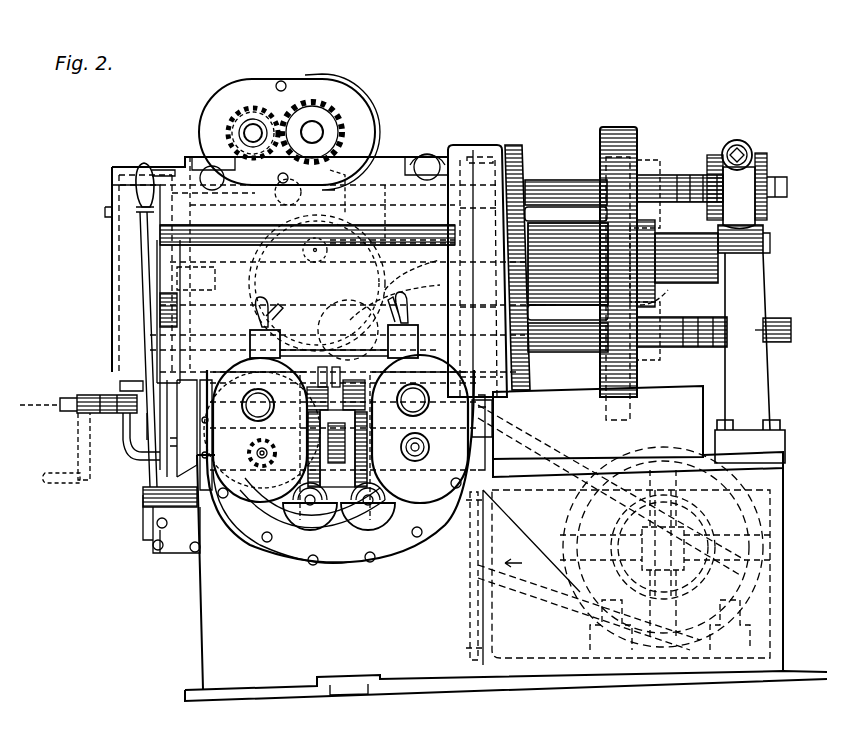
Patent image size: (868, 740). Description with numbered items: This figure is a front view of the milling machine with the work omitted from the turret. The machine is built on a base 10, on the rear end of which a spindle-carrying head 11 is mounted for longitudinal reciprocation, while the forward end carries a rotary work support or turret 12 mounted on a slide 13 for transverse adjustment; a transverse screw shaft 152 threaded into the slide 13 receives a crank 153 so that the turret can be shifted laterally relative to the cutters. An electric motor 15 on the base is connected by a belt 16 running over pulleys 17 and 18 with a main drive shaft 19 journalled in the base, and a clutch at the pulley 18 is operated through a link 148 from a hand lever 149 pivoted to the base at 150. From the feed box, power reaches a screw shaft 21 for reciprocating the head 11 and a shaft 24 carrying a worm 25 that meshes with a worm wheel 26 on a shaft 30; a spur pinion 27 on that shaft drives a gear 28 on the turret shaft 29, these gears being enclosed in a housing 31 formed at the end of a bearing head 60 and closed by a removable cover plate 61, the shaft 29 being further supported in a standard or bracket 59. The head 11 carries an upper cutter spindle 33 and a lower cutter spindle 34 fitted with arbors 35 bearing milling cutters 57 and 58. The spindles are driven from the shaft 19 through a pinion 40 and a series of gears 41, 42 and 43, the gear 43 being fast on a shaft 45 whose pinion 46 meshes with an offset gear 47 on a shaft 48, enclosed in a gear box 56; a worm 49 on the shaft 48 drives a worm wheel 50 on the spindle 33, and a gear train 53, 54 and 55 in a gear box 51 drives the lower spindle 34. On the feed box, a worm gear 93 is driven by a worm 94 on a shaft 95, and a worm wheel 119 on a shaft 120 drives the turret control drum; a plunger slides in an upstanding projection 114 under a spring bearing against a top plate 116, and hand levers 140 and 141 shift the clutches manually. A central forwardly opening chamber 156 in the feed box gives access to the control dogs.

The base 10 is at (506, 578).
The spindle-carrying head 11 is at (439, 149).
The rotary work support or turret 12 is at (617, 127).
The slide 13 is at (150, 390).
The electric motor 15 is at (745, 515).
The belt 16 is at (565, 456).
The pulley 17 is at (697, 520).
The pulley 18 is at (415, 555).
The main drive shaft 19 is at (396, 430).
The screw shaft 21 is at (422, 442).
The shaft 24 is at (269, 465).
The worm 25 is at (278, 420).
The worm wheel 26 is at (250, 352).
The spur pinion 27 is at (498, 412).
The gear 28 is at (498, 150).
The turret shaft 29 is at (763, 248).
The shaft 30 is at (745, 215).
The housing 31 is at (480, 148).
The upper cutter spindle 33 is at (348, 172).
The lower cutter spindle 34 is at (405, 283).
The cutter-carrying arbor 35 is at (720, 162).
The pinion 40 is at (343, 540).
The gear 41 is at (412, 273).
The gear 42 is at (400, 243).
The gear 43 is at (374, 104).
The shaft 45 is at (312, 132).
The pinion 46 is at (322, 115).
The gear 47 is at (255, 105).
The shaft 48 is at (265, 150).
The worm 49 is at (240, 133).
The worm wheel 50 is at (237, 232).
The gear box 51 is at (112, 226).
The gear 53 is at (146, 165).
The gear 54 is at (150, 270).
The gear 55 is at (150, 375).
The gear box 56 is at (215, 106).
The milling cutter 57 is at (645, 160).
The milling cutter 58 is at (667, 293).
The standard or bracket 59 is at (758, 375).
The bearing head 60 is at (317, 287).
The removable cover plate 61 is at (528, 160).
The worm gear 93 is at (368, 470).
The worm 94 is at (408, 482).
The shaft 95 is at (385, 530).
The upstanding projection 114 is at (418, 340).
The top plate 116 is at (268, 508).
The worm wheel 119 is at (278, 522).
The shaft 120 is at (300, 535).
The hand lever 140 is at (408, 298).
The hand lever 141 is at (257, 302).
The link 148 is at (150, 490).
The hand lever 149 is at (156, 325).
The pivot 150 is at (145, 500).
The transverse screw shaft 152 is at (140, 450).
The crank 153 is at (78, 440).
The central forwardly opening chamber 156 is at (312, 540).